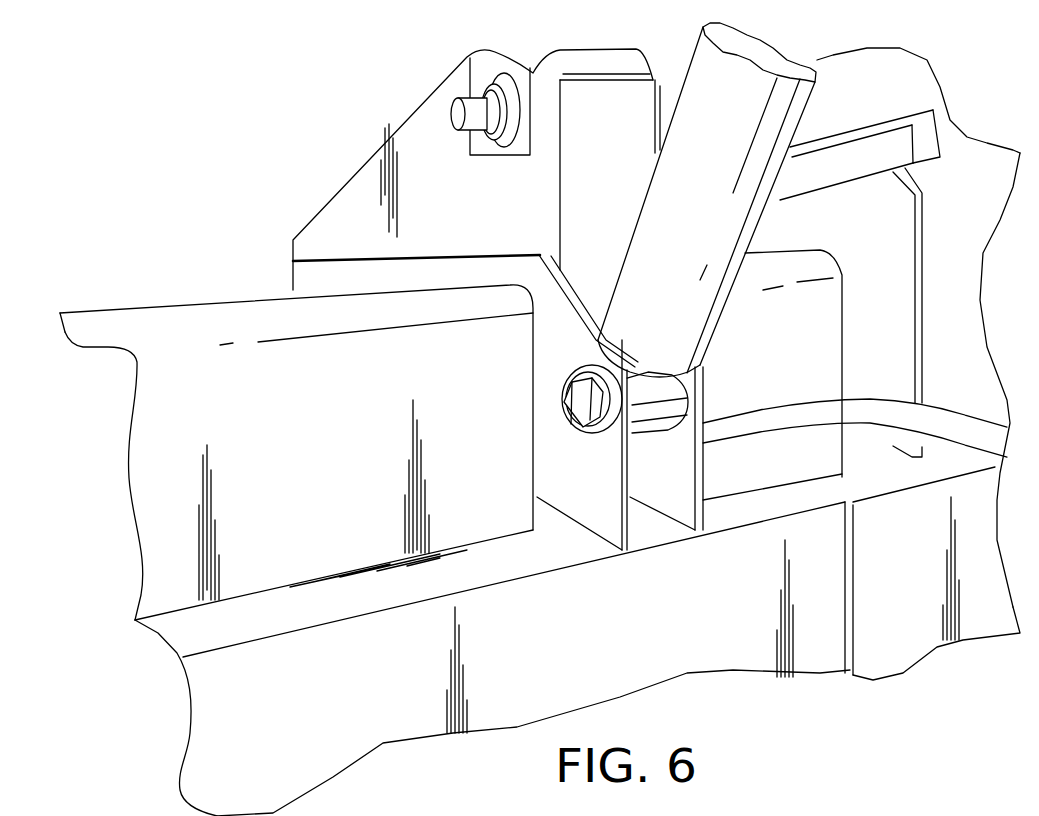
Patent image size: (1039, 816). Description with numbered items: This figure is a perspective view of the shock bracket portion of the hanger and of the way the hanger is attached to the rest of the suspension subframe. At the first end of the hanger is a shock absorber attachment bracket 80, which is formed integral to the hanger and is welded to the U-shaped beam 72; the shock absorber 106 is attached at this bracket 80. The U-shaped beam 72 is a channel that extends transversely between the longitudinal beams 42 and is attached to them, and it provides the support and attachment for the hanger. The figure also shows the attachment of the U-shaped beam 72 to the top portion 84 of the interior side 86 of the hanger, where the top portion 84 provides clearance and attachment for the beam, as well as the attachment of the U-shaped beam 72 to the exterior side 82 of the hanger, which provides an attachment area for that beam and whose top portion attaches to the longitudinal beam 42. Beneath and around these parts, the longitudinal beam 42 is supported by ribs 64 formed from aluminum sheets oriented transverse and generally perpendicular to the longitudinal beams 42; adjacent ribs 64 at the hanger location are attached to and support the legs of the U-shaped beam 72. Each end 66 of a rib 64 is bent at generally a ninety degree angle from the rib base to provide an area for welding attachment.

The longitudinal beam 42 is at (929, 559).
The rib 64 is at (674, 626).
The end of rib 66 is at (555, 547).
The U-shaped beam 72 is at (325, 446).
The shock absorber attachment bracket 80 is at (600, 486).
The exterior side of hanger 82 is at (875, 226).
The top portion of interior side 84 is at (522, 252).
The interior side of hanger 86 is at (484, 231).
The shock absorber 106 is at (713, 227).